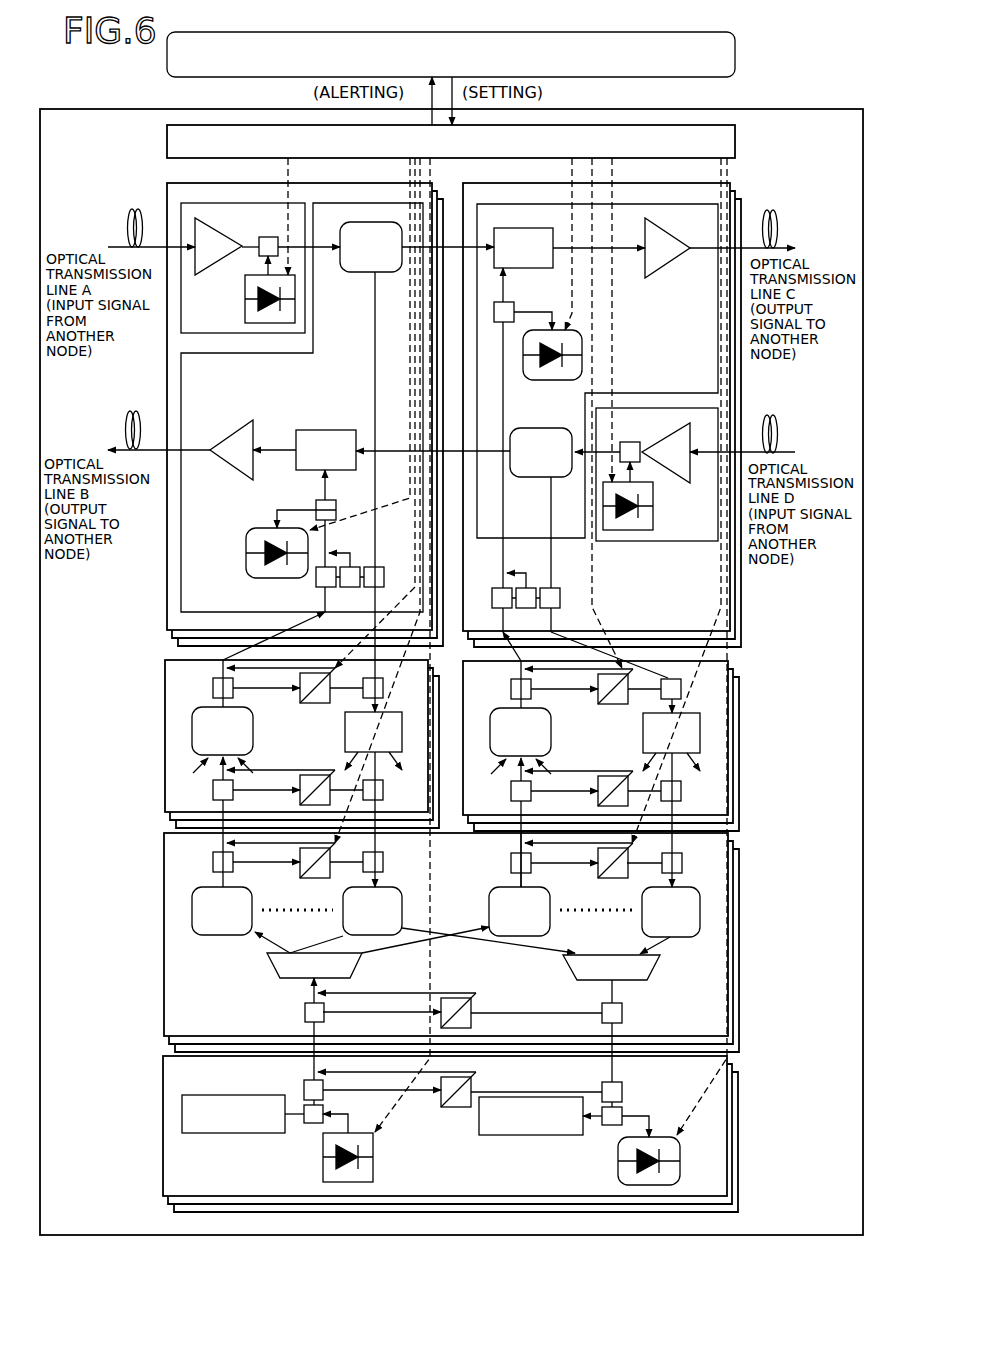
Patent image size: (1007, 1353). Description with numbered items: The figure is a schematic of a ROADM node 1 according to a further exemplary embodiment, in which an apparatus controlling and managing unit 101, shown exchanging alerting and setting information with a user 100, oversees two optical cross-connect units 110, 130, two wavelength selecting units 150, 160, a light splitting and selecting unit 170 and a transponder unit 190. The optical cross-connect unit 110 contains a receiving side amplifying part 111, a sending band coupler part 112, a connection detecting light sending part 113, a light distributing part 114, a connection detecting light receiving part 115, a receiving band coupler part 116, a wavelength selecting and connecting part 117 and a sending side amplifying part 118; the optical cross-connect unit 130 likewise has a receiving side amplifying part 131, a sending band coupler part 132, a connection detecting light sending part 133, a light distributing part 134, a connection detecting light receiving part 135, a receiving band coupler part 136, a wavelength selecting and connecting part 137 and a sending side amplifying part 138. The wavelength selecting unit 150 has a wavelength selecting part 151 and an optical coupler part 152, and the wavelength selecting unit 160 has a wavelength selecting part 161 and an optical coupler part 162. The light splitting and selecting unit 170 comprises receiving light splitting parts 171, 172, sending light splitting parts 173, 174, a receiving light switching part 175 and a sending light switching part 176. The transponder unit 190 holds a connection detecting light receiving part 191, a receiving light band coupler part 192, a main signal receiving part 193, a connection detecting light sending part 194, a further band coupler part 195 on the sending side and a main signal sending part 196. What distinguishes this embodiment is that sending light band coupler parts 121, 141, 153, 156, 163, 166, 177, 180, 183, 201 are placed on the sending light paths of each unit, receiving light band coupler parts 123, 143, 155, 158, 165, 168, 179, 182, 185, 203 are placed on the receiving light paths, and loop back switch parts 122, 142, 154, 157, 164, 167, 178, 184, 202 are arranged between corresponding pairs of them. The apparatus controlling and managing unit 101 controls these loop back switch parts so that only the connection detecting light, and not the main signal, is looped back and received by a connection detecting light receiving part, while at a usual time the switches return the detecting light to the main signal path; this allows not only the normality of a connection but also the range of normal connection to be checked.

The ROADM node 1 is at (142, 110).
The user 100 is at (737, 53).
The apparatus controlling and managing unit 101 is at (737, 141).
The optical cross-connect unit 110 is at (165, 185).
The receiving side amplifying part 111 is at (255, 229).
The sending band coupler part 112 is at (258, 260).
The connection detecting light sending part 113 is at (243, 308).
The light distributing part 114 is at (365, 273).
The connection detecting light receiving part 115 is at (270, 522).
The receiving band coupler part 116 is at (317, 497).
The wavelength selecting and connecting part 117 is at (328, 430).
The sending side amplifying part 118 is at (287, 425).
The sending light band coupler part 121 is at (317, 592).
The loop back switch part 122 is at (354, 566).
The receiving light band coupler part 123 is at (408, 560).
The optical cross-connect unit 130 is at (737, 190).
The receiving side amplifying part 131 is at (642, 441).
The sending band coupler part 132 is at (640, 466).
The connection detecting light sending part 133 is at (655, 516).
The light distributing part 134 is at (542, 478).
The connection detecting light receiving part 135 is at (540, 382).
The receiving band coupler part 136 is at (505, 302).
The wavelength selecting and connecting part 137 is at (505, 228).
The sending side amplifying part 138 is at (665, 268).
The sending light band coupler part 141 is at (493, 598).
The loop back switch part 142 is at (530, 587).
The receiving light band coupler part 143 is at (556, 587).
The wavelength selecting unit 150 is at (165, 681).
The wavelength selecting part 151 is at (417, 705).
The optical coupler part 152 is at (256, 738).
The sending light band coupler part 153 is at (212, 690).
The loop back switch part 154 is at (298, 697).
The receiving light band coupler part 155 is at (362, 697).
The sending light band coupler part 156 is at (208, 785).
The loop back switch part 157 is at (298, 797).
The receiving light band coupler part 158 is at (413, 787).
The wavelength selecting unit 160 is at (735, 680).
The wavelength selecting part 161 is at (683, 718).
The optical coupler part 162 is at (543, 739).
The sending light band coupler part 163 is at (499, 681).
The loop back switch part 164 is at (594, 698).
The receiving light band coupler part 165 is at (645, 703).
The sending light band coupler part 166 is at (498, 797).
The loop back switch part 167 is at (584, 792).
The receiving light band coupler part 168 is at (692, 798).
The light splitting and selecting unit 170 is at (164, 851).
The receiving light splitting part 171 is at (343, 923).
The receiving light splitting part 172 is at (640, 925).
The sending light splitting part 173 is at (256, 901).
The sending light splitting part 174 is at (553, 902).
The receiving light switching part 175 is at (655, 975).
The sending light switching part 176 is at (270, 969).
The sending light band coupler part 177 is at (210, 857).
The loop back switch part 178 is at (298, 869).
The receiving light band coupler part 179 is at (413, 862).
The sending light band coupler part 180 is at (508, 858).
The receiving light band coupler part 182 is at (592, 872).
The sending light band coupler part 183 is at (300, 1018).
The loop back switch part 184 is at (472, 995).
The receiving light band coupler part 185 is at (623, 1023).
The transponder unit 190 is at (163, 1066).
The connection detecting light receiving part 191 is at (617, 1174).
The receiving light band coupler part 192 is at (622, 1112).
The main signal receiving part 193 is at (518, 1136).
The connection detecting light sending part 194 is at (322, 1176).
The optical coupler 195 is at (313, 1124).
The main signal sending part 196 is at (230, 1093).
The sending light band coupler part 201 is at (302, 1078).
The loop back switch part 202 is at (470, 1075).
The receiving light band coupler part 203 is at (622, 1083).